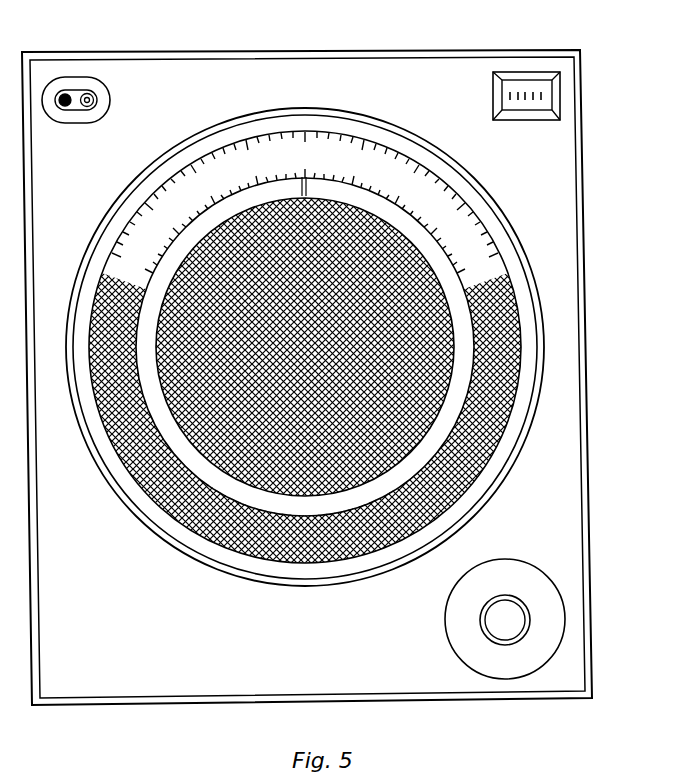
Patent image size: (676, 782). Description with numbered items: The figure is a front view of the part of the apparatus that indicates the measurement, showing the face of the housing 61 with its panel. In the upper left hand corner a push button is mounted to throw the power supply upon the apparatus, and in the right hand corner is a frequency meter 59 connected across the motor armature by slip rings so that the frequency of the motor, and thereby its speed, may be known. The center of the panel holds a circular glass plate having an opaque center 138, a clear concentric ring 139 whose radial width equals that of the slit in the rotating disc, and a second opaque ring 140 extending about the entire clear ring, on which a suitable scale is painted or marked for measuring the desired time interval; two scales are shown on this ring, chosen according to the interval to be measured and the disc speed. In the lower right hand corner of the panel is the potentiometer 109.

The housing front panel 61 is at (323, 68).
The frequency meter 59 is at (560, 88).
The clear concentric ring 139 is at (391, 323).
The opaque center 138 is at (397, 343).
The second opaque ring 140 is at (522, 327).
The potentiometer 109 is at (560, 598).